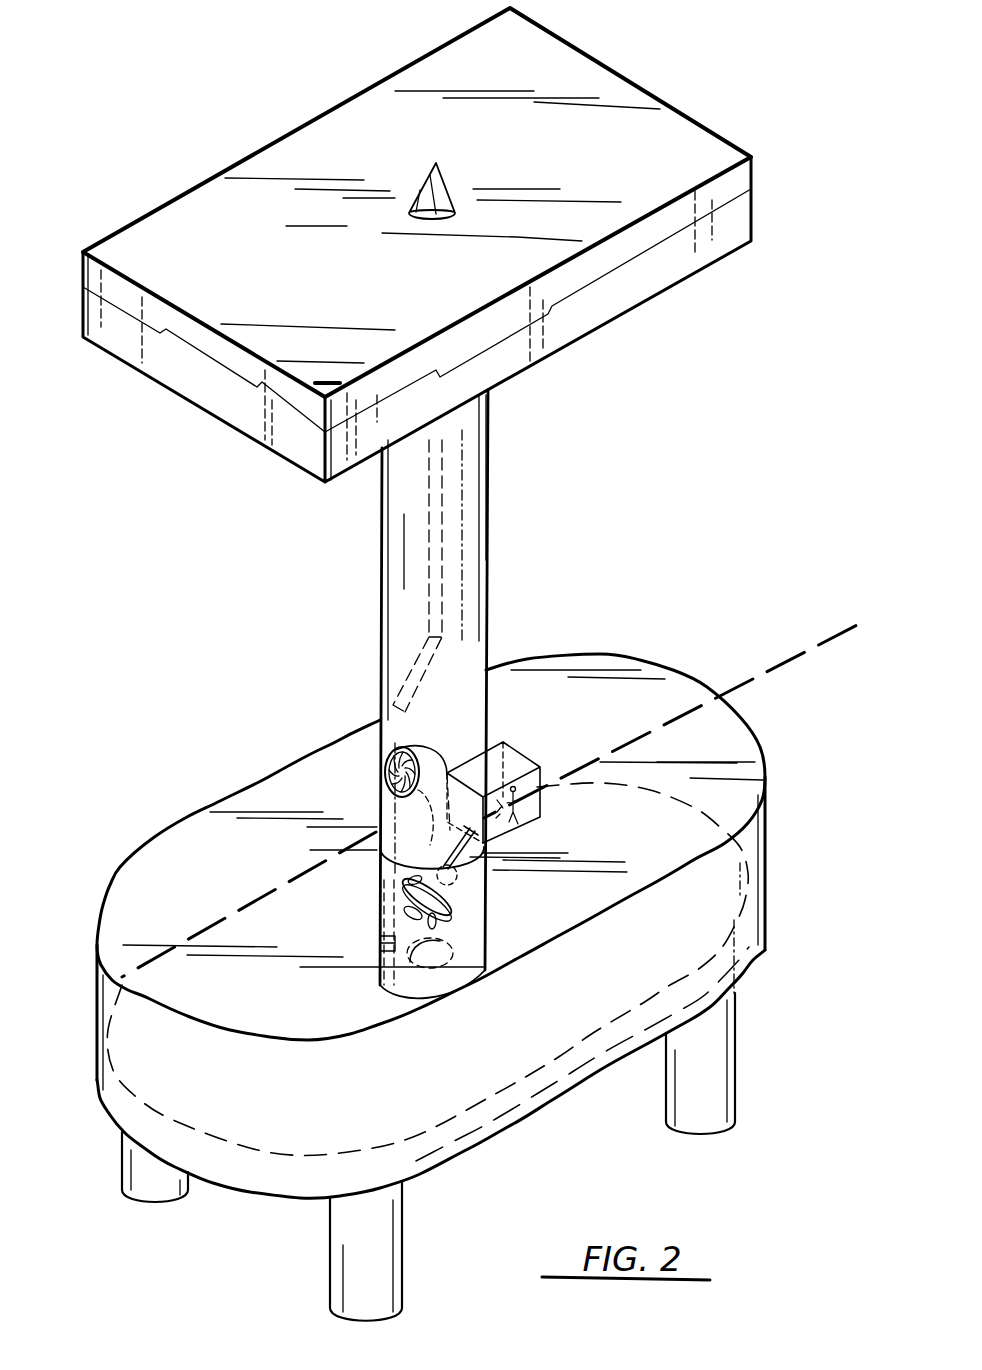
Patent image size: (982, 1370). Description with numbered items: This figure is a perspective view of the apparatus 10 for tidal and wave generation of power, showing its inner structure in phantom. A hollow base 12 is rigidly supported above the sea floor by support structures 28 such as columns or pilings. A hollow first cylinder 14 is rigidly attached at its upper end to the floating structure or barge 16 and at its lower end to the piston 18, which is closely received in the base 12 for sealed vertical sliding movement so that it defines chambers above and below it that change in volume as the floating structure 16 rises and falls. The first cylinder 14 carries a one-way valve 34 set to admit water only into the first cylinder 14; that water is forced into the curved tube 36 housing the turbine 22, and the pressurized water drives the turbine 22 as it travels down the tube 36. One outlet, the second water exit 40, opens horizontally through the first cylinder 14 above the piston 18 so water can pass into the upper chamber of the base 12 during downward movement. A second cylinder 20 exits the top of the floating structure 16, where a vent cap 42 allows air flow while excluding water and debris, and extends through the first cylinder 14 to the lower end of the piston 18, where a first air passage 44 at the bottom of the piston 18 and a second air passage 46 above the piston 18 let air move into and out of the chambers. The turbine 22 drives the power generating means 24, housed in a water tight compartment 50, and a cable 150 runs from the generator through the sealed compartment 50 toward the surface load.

The apparatus for tidal and wave generation of power 10 is at (630, 512).
The base 12 is at (752, 724).
The first cylinder 14 is at (490, 512).
The floating structure or barge 16 is at (649, 91).
The piston 18 is at (272, 1165).
The second cylinder 20 is at (434, 467).
The turbine 22 is at (450, 917).
The power generating means 24 is at (483, 845).
The support structures 28 is at (737, 1062).
The one-way valve 34 is at (383, 752).
The curved tube 36 is at (427, 753).
The second water exit 40 is at (417, 961).
The vent cap 42 is at (443, 187).
The first air passage 44 is at (390, 980).
The second air passage 46 is at (378, 946).
The water tight compartment 50 is at (524, 756).
The cable 150 is at (790, 658).